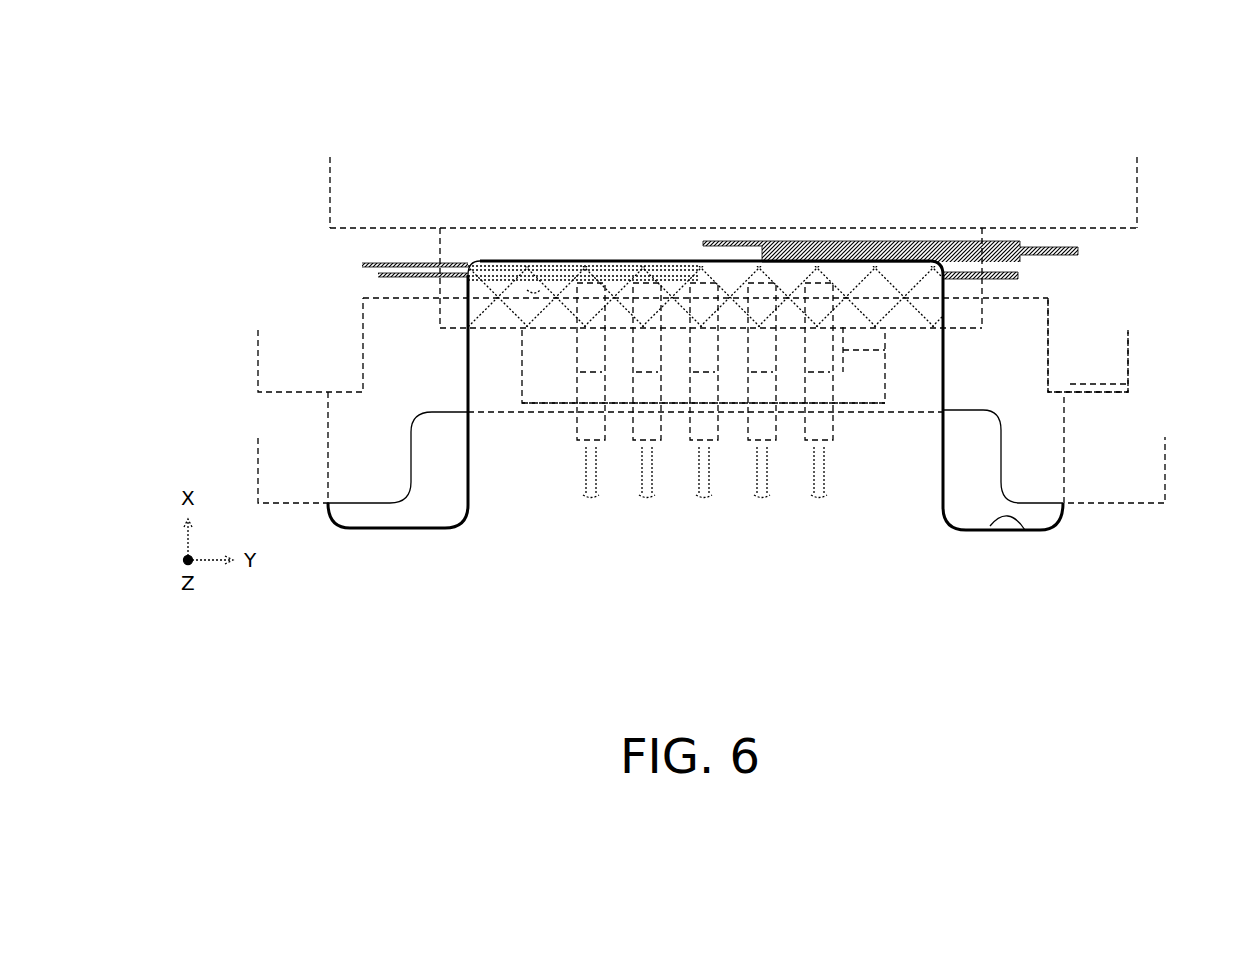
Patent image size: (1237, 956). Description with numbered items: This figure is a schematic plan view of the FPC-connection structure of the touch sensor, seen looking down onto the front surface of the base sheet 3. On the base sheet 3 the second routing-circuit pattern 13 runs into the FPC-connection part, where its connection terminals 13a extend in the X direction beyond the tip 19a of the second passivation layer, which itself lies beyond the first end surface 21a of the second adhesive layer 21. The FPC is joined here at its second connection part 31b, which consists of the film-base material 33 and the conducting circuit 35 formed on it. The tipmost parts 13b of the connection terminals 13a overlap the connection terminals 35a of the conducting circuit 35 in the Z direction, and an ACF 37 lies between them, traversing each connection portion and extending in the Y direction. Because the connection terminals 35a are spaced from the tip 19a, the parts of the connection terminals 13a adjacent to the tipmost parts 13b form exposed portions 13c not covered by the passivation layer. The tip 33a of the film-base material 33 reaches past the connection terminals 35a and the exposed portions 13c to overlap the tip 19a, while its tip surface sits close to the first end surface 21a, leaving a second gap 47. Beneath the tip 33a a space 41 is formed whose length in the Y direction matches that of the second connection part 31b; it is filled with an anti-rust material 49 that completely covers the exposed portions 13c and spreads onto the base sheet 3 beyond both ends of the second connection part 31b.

The base sheet 3 is at (960, 395).
The second routing-circuit pattern 13 is at (807, 236).
The connection terminals 13a is at (980, 181).
The tipmost parts 13b is at (887, 345).
The exposed portions 13c is at (840, 335).
The tip of the second passivation layer 19a is at (388, 310).
The second adhesive layer 21 is at (761, 173).
The first end surface of the second adhesive layer 21a is at (1114, 232).
The second connection part 31b is at (953, 362).
The film-base material 33 is at (1025, 530).
The tip of the film-base material 33a is at (677, 262).
The conducting circuit 35 is at (710, 505).
The connection terminals of the conducting circuit 35a is at (838, 430).
The ACF 37 is at (525, 388).
The space 41 is at (537, 260).
The second gap 47 is at (657, 242).
The anti-rust material 49 is at (433, 236).